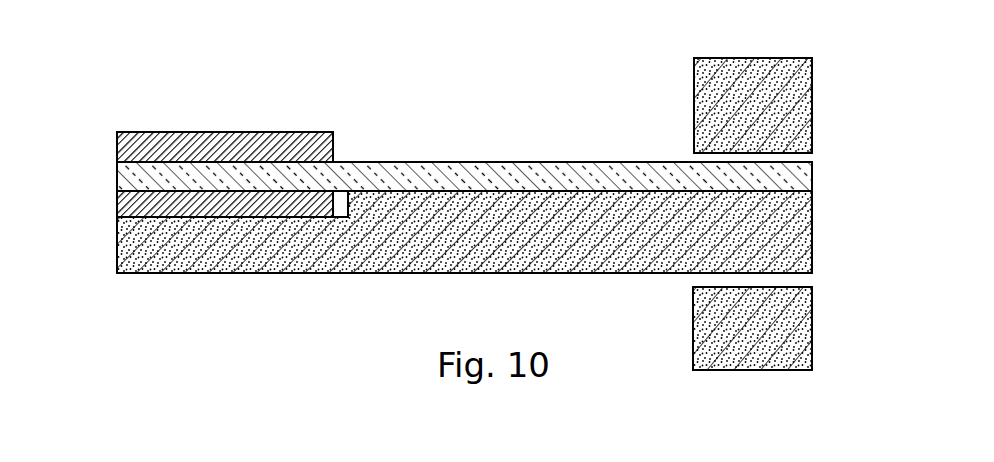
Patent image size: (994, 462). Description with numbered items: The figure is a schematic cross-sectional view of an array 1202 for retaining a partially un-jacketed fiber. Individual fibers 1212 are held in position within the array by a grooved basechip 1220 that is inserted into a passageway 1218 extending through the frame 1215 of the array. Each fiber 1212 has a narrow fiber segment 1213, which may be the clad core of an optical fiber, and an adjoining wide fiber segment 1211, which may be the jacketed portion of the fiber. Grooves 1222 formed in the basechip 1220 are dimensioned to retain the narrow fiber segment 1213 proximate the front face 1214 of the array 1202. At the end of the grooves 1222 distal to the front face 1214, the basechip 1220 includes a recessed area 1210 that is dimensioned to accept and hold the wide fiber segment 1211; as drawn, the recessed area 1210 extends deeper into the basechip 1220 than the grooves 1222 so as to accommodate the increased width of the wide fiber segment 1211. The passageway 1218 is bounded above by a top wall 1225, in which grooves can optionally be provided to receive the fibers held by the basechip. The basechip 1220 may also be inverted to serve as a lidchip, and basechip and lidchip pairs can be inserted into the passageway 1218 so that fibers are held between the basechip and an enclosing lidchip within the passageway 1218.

The array 1202 is at (514, 84).
The recessed area 1210 is at (119, 243).
The wide fiber segment 1211 is at (232, 132).
The fiber 1212 is at (386, 160).
The narrow fiber segment 1213 is at (560, 161).
The front face 1214 is at (812, 88).
The frame 1215 is at (762, 58).
The passageway 1218 is at (806, 157).
The basechip 1220 is at (812, 265).
The grooves 1222 is at (812, 207).
The top wall 1225 is at (698, 157).